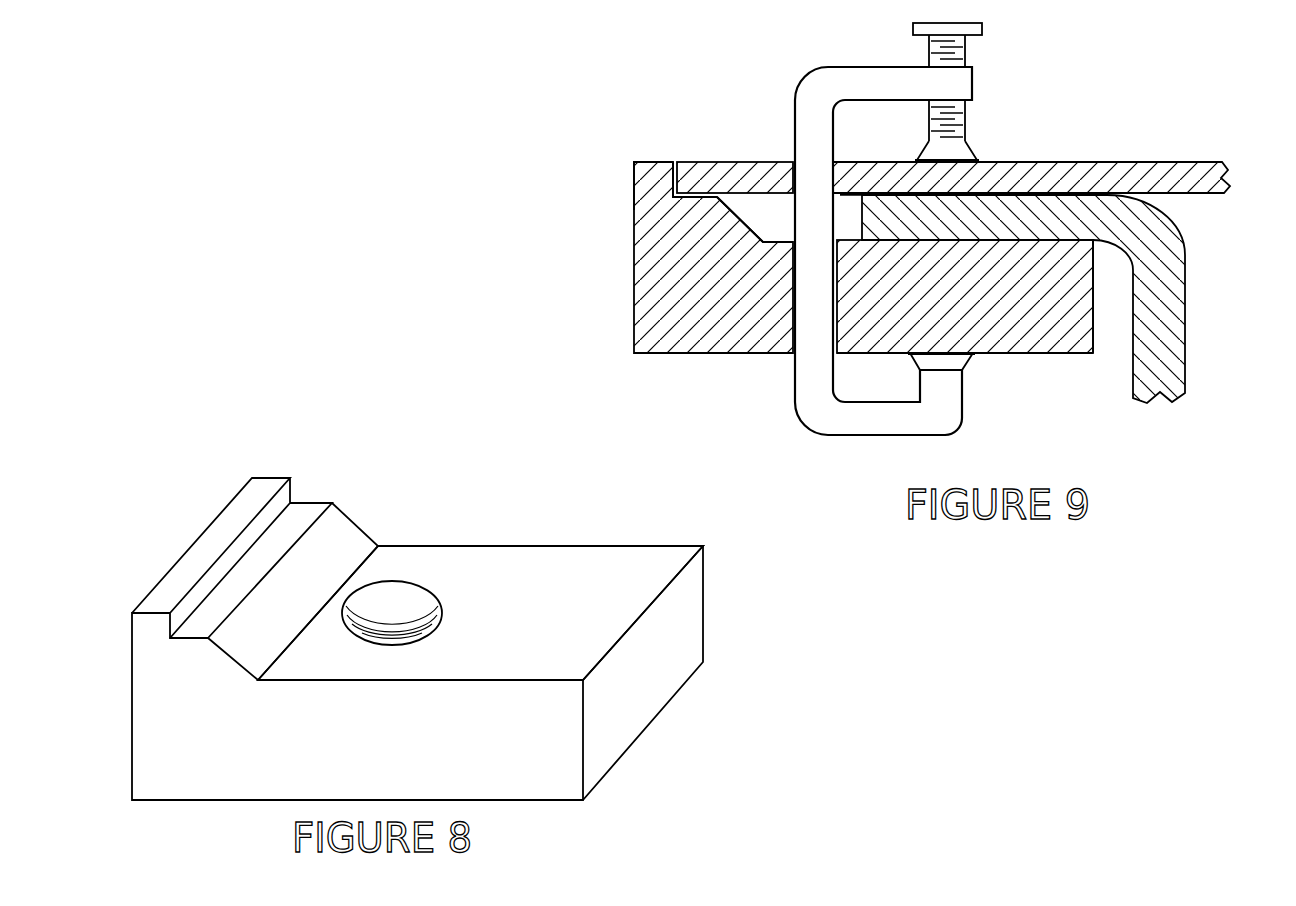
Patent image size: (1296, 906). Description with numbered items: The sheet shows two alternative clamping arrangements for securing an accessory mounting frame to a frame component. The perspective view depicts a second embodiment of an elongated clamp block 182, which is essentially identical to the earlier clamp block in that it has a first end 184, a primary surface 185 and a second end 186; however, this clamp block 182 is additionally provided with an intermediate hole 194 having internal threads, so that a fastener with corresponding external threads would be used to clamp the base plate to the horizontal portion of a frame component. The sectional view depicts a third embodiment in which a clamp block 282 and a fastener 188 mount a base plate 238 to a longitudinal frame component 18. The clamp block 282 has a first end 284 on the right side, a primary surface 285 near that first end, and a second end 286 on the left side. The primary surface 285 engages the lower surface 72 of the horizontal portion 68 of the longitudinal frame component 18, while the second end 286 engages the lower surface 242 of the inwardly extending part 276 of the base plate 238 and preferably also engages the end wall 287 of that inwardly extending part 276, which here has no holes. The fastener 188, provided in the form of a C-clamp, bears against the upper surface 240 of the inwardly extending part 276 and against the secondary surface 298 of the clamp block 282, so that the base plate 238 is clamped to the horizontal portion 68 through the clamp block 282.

In FIG. 9, the longitudinal frame component 18 is at (1194, 319).
In FIG. 9, the horizontal portion 68 is at (1008, 229).
In FIG. 9, the lower surface 72 is at (971, 245).
In FIG. 9, the fastener 188 is at (812, 377).
In FIG. 9, the base plate 238 is at (1107, 173).
In FIG. 9, the upper surface 240 is at (998, 155).
In FIG. 9, the lower surface 242 is at (692, 204).
In FIG. 9, the inwardly extending part 276 is at (749, 148).
In FIG. 9, the clamp block 282 is at (748, 304).
In FIG. 9, the first end 284 is at (1100, 278).
In FIG. 9, the primary surface 285 is at (923, 236).
In FIG. 9, the second end 286 is at (642, 158).
In FIG. 9, the end wall 287 is at (668, 181).
In FIG. 9, the secondary surface 298 is at (1010, 358).
In FIG. 8, the clamp block 182 is at (532, 522).
In FIG. 8, the first end 184 is at (685, 537).
In FIG. 8, the primary surface 185 is at (552, 631).
In FIG. 8, the second end 186 is at (274, 462).
In FIG. 8, the intermediate hole 194 is at (397, 600).